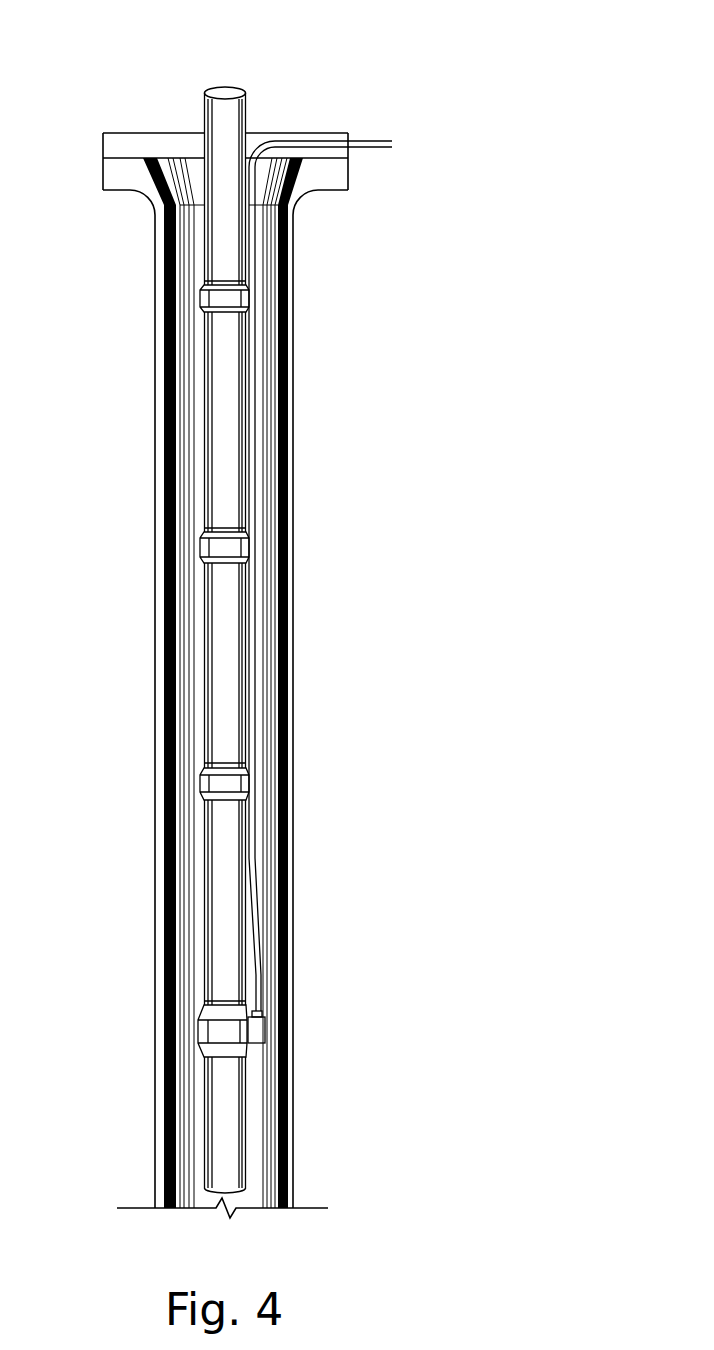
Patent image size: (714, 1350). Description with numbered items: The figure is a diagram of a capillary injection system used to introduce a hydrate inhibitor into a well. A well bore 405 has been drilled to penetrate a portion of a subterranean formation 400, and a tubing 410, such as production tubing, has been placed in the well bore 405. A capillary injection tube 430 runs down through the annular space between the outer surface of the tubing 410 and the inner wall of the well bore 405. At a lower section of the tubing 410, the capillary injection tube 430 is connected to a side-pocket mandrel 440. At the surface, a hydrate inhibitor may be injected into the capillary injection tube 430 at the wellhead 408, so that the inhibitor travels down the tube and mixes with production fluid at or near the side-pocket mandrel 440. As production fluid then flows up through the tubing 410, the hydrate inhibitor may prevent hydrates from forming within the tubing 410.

The subterranean formation 400 is at (488, 56).
The well bore 405 is at (155, 373).
The wellhead 408 is at (202, 132).
The tubing 410 is at (230, 613).
The capillary injection tube 430 is at (250, 230).
The side-pocket mandrel 440 is at (262, 1032).